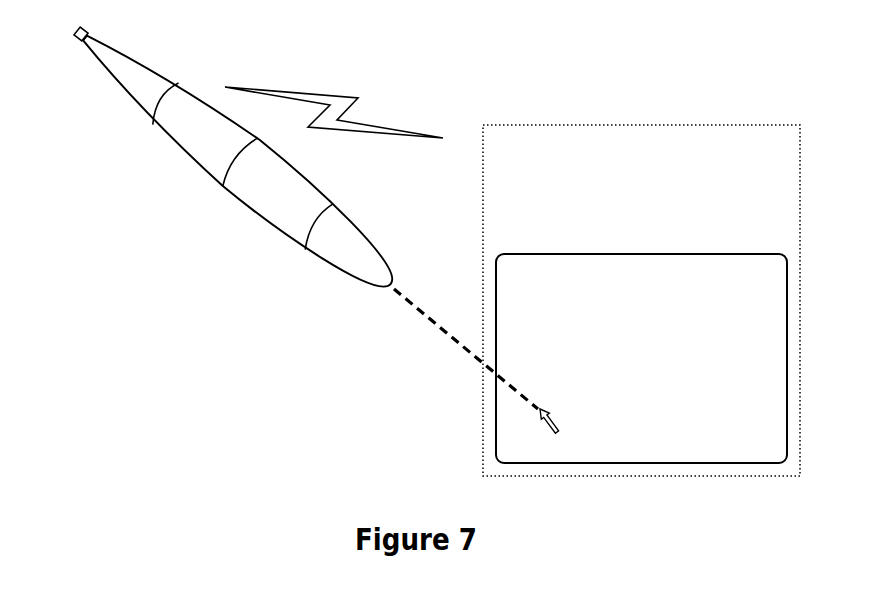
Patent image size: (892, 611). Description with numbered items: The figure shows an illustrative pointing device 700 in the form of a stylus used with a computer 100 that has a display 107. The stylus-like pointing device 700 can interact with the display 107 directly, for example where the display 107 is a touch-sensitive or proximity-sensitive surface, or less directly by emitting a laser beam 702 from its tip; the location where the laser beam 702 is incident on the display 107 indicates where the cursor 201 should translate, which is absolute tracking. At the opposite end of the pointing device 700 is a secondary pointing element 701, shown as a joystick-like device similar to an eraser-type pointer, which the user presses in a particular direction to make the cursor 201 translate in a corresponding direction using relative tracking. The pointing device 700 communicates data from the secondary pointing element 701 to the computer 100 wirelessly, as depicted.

The pointing device 700 is at (204, 158).
The secondary pointing element 701 is at (71, 46).
The laser beam 702 is at (430, 323).
The computer 100 is at (629, 191).
The display 107 is at (629, 388).
The cursor 201 is at (543, 424).